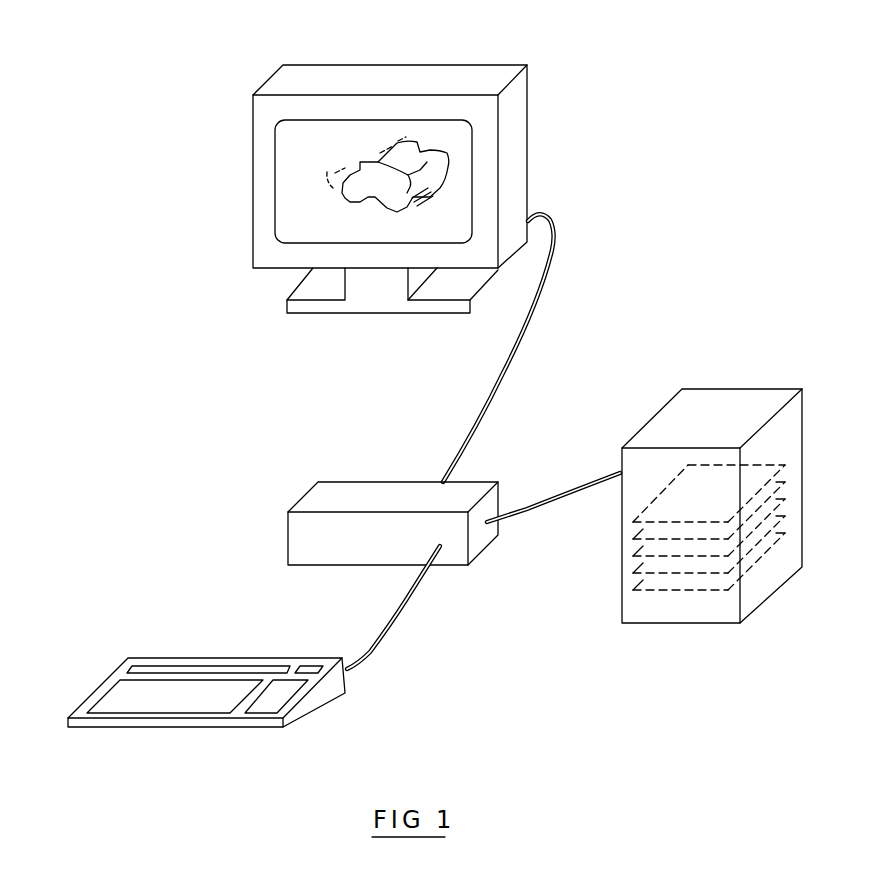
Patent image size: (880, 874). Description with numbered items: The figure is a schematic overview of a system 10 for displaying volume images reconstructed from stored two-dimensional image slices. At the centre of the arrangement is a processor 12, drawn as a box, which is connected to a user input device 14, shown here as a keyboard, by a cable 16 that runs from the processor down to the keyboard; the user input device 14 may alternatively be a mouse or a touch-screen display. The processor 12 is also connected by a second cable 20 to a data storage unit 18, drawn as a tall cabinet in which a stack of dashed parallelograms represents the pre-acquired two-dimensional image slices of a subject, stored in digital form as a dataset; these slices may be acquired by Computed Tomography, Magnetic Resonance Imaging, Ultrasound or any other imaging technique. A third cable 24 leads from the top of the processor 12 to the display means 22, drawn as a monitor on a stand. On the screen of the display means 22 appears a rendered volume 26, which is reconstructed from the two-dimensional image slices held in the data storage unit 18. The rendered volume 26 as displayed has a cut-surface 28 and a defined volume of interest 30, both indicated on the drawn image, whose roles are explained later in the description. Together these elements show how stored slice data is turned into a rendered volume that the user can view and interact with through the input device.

The system 10 is at (92, 194).
The processor 12 is at (302, 537).
The user input device 14 is at (317, 697).
The keyboard cable 16 is at (395, 630).
The data storage unit 18 is at (695, 408).
The storage cable 20 is at (530, 507).
The display means 22 is at (520, 130).
The monitor cable 24 is at (553, 258).
The rendered volume 26 is at (440, 172).
The cut-surface 28 is at (393, 215).
The volume of interest 30 is at (330, 190).